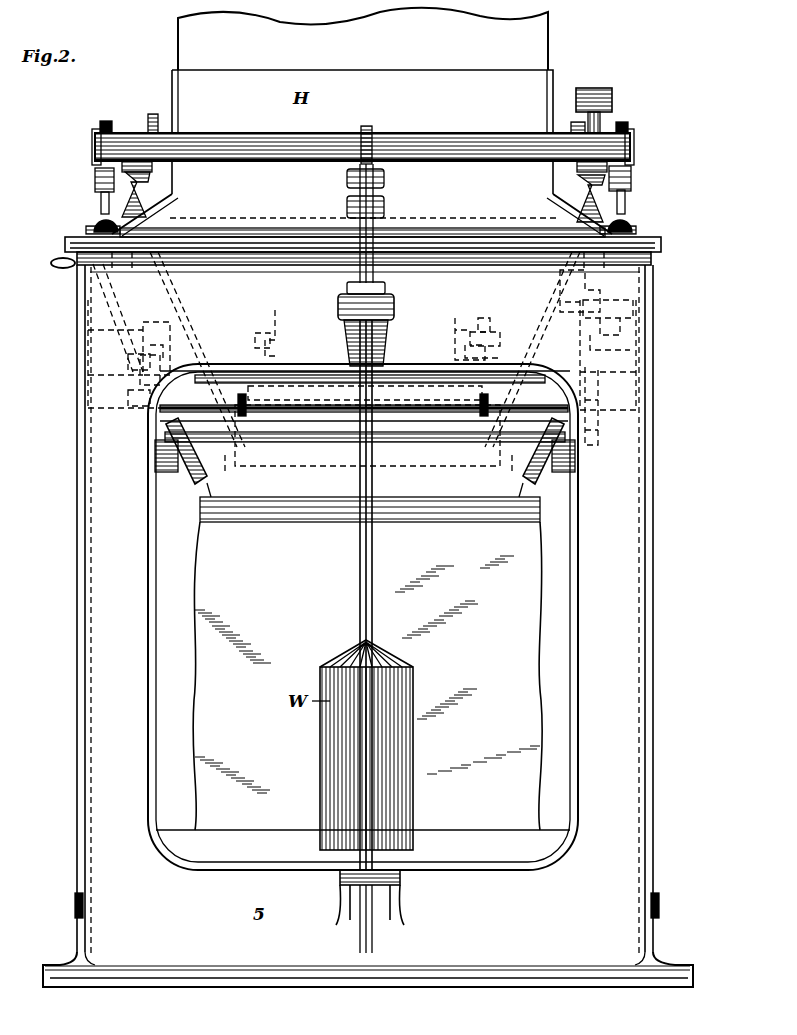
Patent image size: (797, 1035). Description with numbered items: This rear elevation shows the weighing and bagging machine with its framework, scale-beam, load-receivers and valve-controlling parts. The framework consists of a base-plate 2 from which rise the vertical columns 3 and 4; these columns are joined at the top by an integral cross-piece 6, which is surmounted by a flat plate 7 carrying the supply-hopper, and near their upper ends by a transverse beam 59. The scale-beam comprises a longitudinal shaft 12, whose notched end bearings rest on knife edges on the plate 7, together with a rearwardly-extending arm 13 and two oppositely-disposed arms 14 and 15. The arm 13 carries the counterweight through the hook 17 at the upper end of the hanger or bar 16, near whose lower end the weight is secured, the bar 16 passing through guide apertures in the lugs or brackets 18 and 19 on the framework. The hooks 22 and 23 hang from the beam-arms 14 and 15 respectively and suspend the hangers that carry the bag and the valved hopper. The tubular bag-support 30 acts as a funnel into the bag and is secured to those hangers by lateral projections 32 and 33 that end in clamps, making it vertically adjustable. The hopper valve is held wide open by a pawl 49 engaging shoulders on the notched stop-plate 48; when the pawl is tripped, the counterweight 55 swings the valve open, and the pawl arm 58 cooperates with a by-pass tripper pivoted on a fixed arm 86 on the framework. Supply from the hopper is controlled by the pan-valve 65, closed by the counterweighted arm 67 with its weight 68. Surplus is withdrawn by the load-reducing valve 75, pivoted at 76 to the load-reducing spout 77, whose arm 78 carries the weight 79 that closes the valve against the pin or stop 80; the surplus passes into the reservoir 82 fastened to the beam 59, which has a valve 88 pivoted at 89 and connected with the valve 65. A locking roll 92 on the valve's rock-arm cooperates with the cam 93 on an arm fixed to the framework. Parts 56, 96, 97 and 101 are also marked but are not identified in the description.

The base-plate 2 is at (188, 982).
The vertical column 3 is at (628, 578).
The vertical column 4 is at (98, 570).
The cross-piece 6 is at (364, 274).
The flat plate 7 is at (65, 241).
The longitudinal shaft 12 is at (438, 142).
The beam-arm 13 is at (367, 138).
The beam-arm 14 is at (632, 183).
The beam-arm 15 is at (95, 178).
The hanger or bar 16 is at (360, 538).
The hook 17 is at (372, 236).
The lug or bracket 18 is at (392, 305).
The lug or bracket 19 is at (400, 880).
The hook 22 is at (627, 208).
The hook 23 is at (101, 205).
The bag-support 30 is at (297, 487).
The lateral projection 32 is at (566, 462).
The lateral projection 33 is at (162, 462).
The notched stop-plate 48 is at (598, 424).
The pawl 49 is at (600, 357).
The counterweight 55 is at (152, 322).
The dashed arm 56 is at (160, 362).
The pawl arm 58 is at (612, 328).
The transverse beam 59 is at (290, 392).
The pan-valve 65 is at (160, 178).
The counterweighted arm 67 is at (600, 115).
The weight 68 is at (590, 90).
The load-reducing valve 75 is at (365, 392).
The pivot 76 is at (492, 338).
The load-reducing spout 77 is at (274, 318).
The arm 78 is at (470, 330).
The weight 79 is at (487, 318).
The pin or stop 80 is at (490, 344).
The reservoir 82 is at (406, 416).
The fixed arm 86 is at (612, 345).
The valve 88 is at (268, 466).
The pivot 89 is at (580, 300).
The antifriction-roll 92 is at (128, 398).
The cam 93 is at (128, 358).
The dashed tube 96 is at (100, 288).
The oval fitting 97 is at (55, 266).
The bracket 101 is at (148, 118).